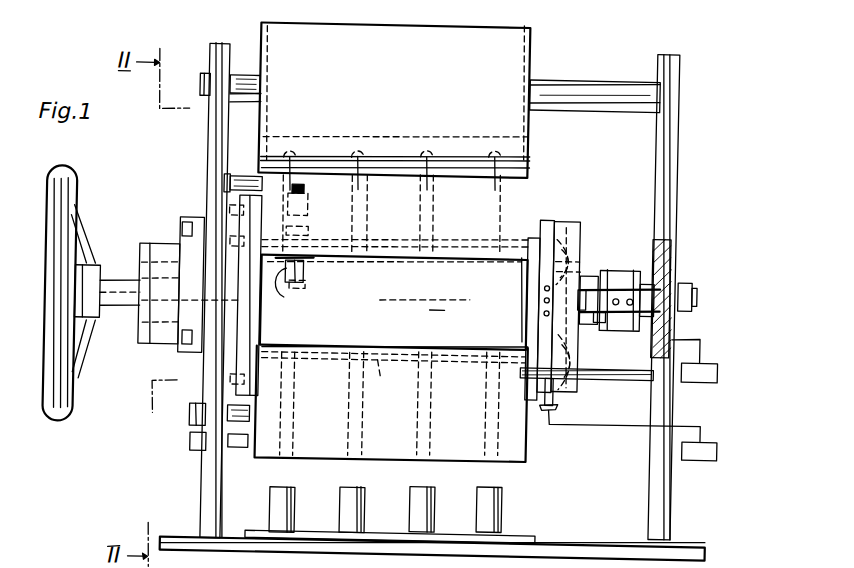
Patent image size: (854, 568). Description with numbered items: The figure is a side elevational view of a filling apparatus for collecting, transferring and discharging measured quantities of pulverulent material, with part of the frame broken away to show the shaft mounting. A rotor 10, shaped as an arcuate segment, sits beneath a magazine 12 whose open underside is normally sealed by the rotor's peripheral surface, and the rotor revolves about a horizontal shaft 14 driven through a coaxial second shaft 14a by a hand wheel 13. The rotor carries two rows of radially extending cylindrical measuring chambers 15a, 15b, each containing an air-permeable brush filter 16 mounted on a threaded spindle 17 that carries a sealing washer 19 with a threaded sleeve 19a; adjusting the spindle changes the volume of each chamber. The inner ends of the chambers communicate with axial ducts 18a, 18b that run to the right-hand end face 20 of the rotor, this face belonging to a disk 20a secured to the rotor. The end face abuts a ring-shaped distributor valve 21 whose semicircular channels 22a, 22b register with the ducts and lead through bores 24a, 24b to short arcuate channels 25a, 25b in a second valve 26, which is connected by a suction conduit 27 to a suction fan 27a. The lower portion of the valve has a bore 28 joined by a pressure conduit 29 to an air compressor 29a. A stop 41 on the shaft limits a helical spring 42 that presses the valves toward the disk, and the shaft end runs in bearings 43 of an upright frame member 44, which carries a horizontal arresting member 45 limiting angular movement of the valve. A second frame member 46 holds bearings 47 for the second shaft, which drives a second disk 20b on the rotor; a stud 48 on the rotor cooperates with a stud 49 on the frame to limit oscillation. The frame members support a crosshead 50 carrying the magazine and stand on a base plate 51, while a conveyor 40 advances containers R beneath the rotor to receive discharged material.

The rotor 10 is at (529, 448).
The magazine 12 is at (523, 56).
The hand wheel 13 is at (72, 412).
The shaft 14 is at (598, 287).
The second shaft 14a is at (120, 306).
The measuring chambers 15a is at (297, 197).
The measuring chambers 15b is at (390, 403).
The filter 16 is at (298, 199).
The threaded spindle 17 is at (298, 236).
The duct 18a is at (394, 213).
The duct 18b is at (388, 381).
The sealing washer 19 is at (302, 264).
The sleeve 19a is at (284, 273).
The end face 20 is at (546, 212).
The disk 20a is at (524, 272).
The second disk 20b is at (246, 250).
The distributor valve 21 is at (552, 218).
The channel 22a is at (576, 244).
The channel 22b is at (607, 246).
The bore 24a is at (579, 262).
The bore 24b is at (604, 253).
The arcuate channel 25a is at (582, 337).
The arcuate channel 25b is at (604, 360).
The second valve 26 is at (571, 230).
The suction conduit 27 is at (599, 315).
The suction fan 27a is at (705, 376).
The bore 28 is at (522, 342).
The pressure conduit 29 is at (555, 395).
The air compressor 29a is at (703, 454).
The conveyor 40 is at (537, 536).
The stop 41 is at (638, 266).
The helical spring 42 is at (596, 284).
The bearings 43 is at (681, 283).
The frame member 44 is at (664, 498).
The arresting member 45 is at (612, 366).
The second frame member 46 is at (212, 497).
The bearings 47 is at (166, 355).
The stud 48 is at (240, 185).
The stud 49 is at (229, 419).
The crosshead 50 is at (579, 87).
The base plate 51 is at (709, 545).
The container R is at (345, 507).